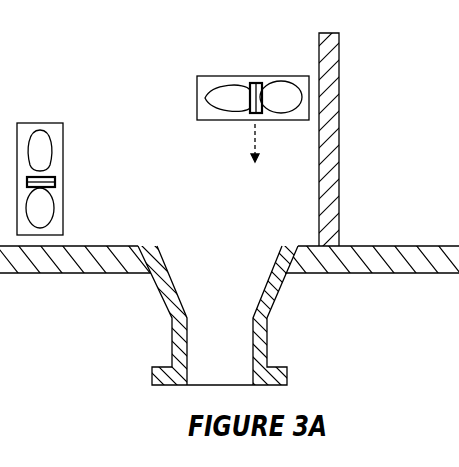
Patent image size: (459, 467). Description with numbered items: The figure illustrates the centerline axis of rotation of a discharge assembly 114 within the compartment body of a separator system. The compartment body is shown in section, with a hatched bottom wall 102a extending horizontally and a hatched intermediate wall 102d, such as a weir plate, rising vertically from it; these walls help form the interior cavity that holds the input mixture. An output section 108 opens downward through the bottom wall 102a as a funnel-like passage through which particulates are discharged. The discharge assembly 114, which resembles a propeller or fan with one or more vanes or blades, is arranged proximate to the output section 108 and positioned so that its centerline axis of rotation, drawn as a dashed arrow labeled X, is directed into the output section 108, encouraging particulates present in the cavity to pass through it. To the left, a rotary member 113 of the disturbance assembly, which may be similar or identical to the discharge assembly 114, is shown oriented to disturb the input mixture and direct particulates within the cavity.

The bottom wall 102a is at (100, 261).
The intermediate wall 102d is at (345, 153).
The output section 108 is at (271, 309).
The rotary member 113 is at (56, 123).
The discharge assembly 114 is at (197, 76).